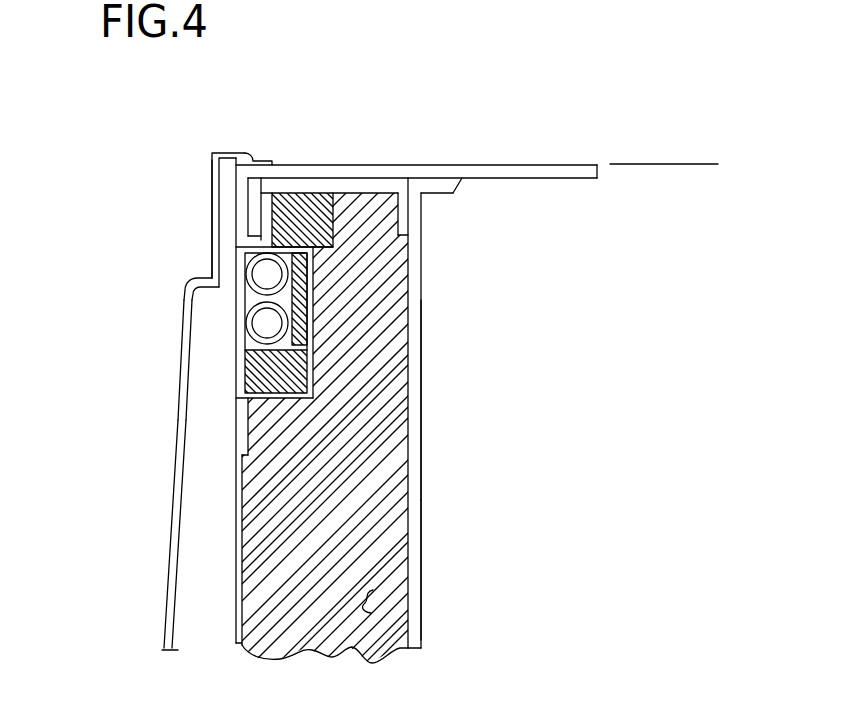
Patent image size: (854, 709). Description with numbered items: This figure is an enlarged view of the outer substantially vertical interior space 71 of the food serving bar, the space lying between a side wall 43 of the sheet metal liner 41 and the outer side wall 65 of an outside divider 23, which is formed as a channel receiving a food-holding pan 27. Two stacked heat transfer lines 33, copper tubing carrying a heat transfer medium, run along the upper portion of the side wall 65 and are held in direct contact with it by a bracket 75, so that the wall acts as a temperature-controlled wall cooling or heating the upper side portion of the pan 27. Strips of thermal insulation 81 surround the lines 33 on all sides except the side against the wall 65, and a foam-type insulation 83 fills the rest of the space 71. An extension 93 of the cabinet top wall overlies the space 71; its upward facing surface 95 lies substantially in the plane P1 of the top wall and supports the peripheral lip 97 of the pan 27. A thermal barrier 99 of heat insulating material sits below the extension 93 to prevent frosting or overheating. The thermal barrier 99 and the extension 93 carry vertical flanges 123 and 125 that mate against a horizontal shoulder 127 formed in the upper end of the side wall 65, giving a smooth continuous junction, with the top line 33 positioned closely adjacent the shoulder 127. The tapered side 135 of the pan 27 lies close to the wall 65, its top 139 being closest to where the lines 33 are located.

The divider 23 is at (430, 500).
The pan 27 is at (173, 562).
The heat transfer line 33 is at (248, 288).
The liner 41 is at (421, 557).
The side wall of liner 43 is at (421, 437).
The side wall of channel 65 is at (237, 623).
The outer substantially vertical interior space 71 is at (370, 600).
The bracket 75 is at (318, 316).
The strip of thermal insulation 81 is at (307, 212).
The foam-type insulation 83 is at (263, 490).
The extension of top wall 93 is at (530, 165).
The upward facing surface 95 is at (328, 164).
The peripheral lip 97 is at (257, 152).
The thermal barrier 99 is at (408, 207).
The vertical flange of thermal barrier 123 is at (258, 212).
The vertical flange of top wall extension 125 is at (238, 192).
The horizontal shoulder 127 is at (245, 249).
The side of pan 135 is at (184, 393).
The top of pan 139 is at (213, 151).
The plane of top wall P1 is at (685, 165).